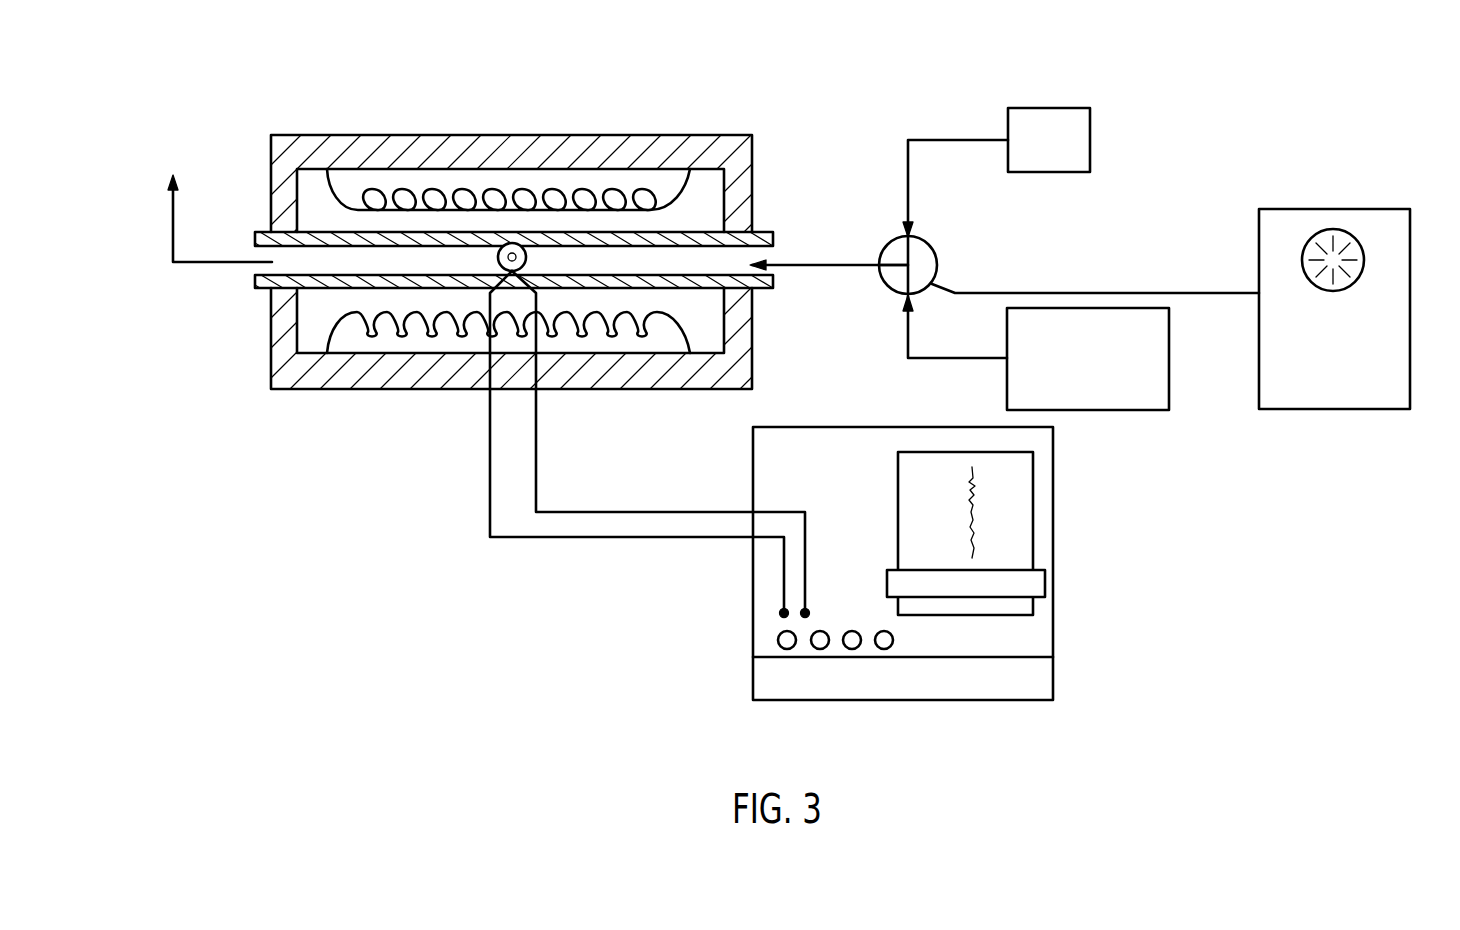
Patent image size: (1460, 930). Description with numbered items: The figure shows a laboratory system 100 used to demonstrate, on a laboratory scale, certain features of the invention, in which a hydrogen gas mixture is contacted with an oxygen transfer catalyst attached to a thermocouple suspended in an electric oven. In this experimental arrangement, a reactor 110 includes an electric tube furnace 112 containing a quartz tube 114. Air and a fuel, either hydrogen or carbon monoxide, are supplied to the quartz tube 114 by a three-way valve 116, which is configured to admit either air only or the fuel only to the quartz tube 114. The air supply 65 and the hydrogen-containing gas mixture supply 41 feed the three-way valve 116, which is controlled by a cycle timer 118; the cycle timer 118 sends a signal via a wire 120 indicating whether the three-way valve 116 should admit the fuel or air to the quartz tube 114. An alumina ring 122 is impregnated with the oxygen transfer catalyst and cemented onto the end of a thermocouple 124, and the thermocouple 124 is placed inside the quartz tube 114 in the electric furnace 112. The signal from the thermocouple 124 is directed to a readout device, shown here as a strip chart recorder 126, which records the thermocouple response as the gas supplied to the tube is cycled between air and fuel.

The system 100 is at (921, 68).
The reactor 110 is at (523, 132).
The electric tube furnace 112 is at (706, 142).
The quartz tube 114 is at (300, 292).
The three-way valve 116 is at (933, 250).
The cycle timer 118 is at (1355, 208).
The wire 120 is at (1117, 292).
The alumina ring 122 is at (498, 256).
The thermocouple 124 is at (503, 268).
The strip chart recorder 126 is at (1043, 542).
The air source 65 is at (1092, 128).
The hydrogen-containing gas mixture source 41 is at (1123, 411).